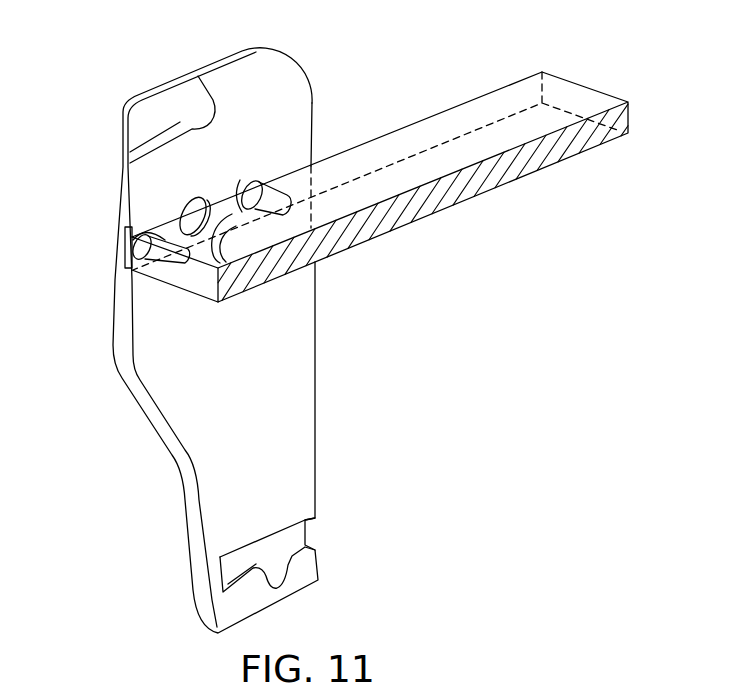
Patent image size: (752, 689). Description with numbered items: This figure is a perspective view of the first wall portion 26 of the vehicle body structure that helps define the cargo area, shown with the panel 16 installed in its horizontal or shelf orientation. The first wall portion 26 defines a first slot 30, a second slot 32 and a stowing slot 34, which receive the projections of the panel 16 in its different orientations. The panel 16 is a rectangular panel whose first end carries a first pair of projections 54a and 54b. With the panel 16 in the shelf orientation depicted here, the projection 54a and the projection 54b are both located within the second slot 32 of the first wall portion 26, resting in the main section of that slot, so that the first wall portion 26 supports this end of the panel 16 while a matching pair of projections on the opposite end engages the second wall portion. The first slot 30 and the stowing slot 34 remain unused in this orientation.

The panel 16 is at (570, 100).
The first wall portion 26 is at (272, 85).
The first slot 30 is at (158, 113).
The second slot 32 is at (220, 202).
The stowing slot 34 is at (292, 538).
The projection 54a is at (126, 254).
The projection 54b is at (237, 190).